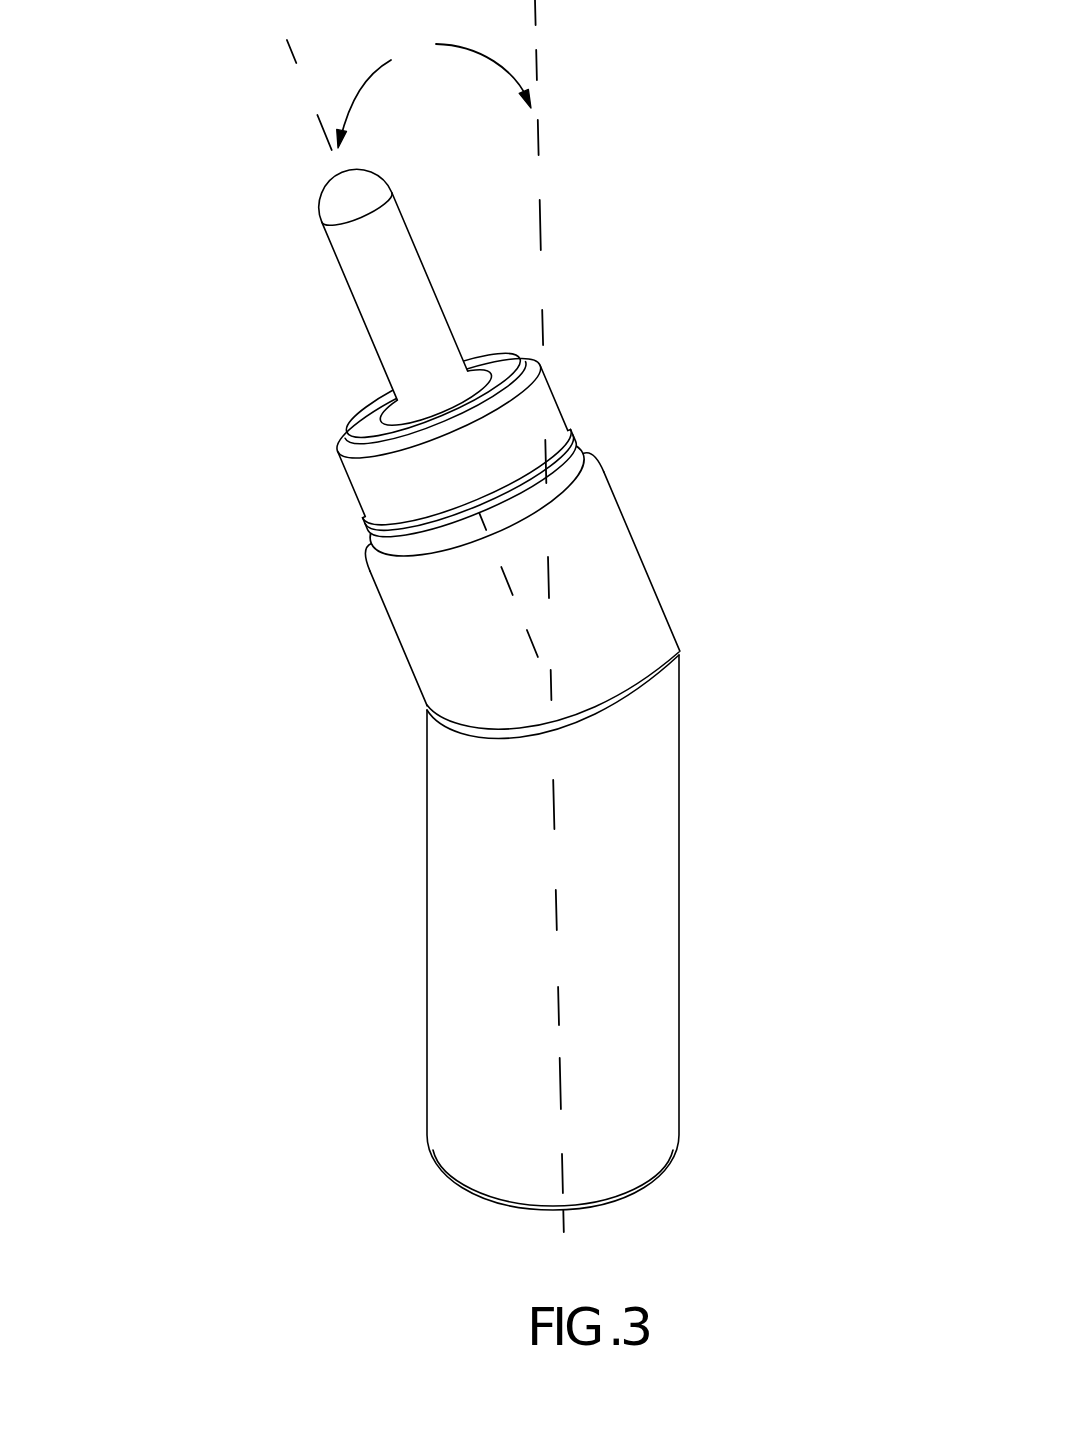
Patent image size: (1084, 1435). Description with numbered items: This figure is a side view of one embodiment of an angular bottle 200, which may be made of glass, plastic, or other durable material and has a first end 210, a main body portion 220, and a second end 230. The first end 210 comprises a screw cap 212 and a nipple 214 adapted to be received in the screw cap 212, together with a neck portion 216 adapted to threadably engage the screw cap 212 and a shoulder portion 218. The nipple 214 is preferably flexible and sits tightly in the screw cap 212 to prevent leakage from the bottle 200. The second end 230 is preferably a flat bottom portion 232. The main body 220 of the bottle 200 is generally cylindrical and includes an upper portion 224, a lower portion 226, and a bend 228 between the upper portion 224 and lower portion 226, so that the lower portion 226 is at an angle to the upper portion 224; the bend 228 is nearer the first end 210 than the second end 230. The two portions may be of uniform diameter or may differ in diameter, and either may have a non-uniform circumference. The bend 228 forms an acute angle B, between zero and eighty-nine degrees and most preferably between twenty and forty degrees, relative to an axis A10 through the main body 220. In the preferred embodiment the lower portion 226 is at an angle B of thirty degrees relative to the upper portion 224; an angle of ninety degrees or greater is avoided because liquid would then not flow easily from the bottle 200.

The bottle 200 is at (487, 647).
The first end 210 is at (435, 352).
The screw cap 212 is at (522, 425).
The nipple 214 is at (378, 278).
The neck portion 216 is at (572, 453).
The shoulder portion 218 is at (583, 475).
The main body portion 220 is at (519, 853).
The upper portion 224 is at (651, 966).
The lower portion 226 is at (601, 586).
The bend 228 is at (663, 680).
The second end 230 is at (610, 1222).
The flat bottom portion 232 is at (413, 1162).
The axis A10 is at (560, 803).
The acute angle B is at (434, 91).